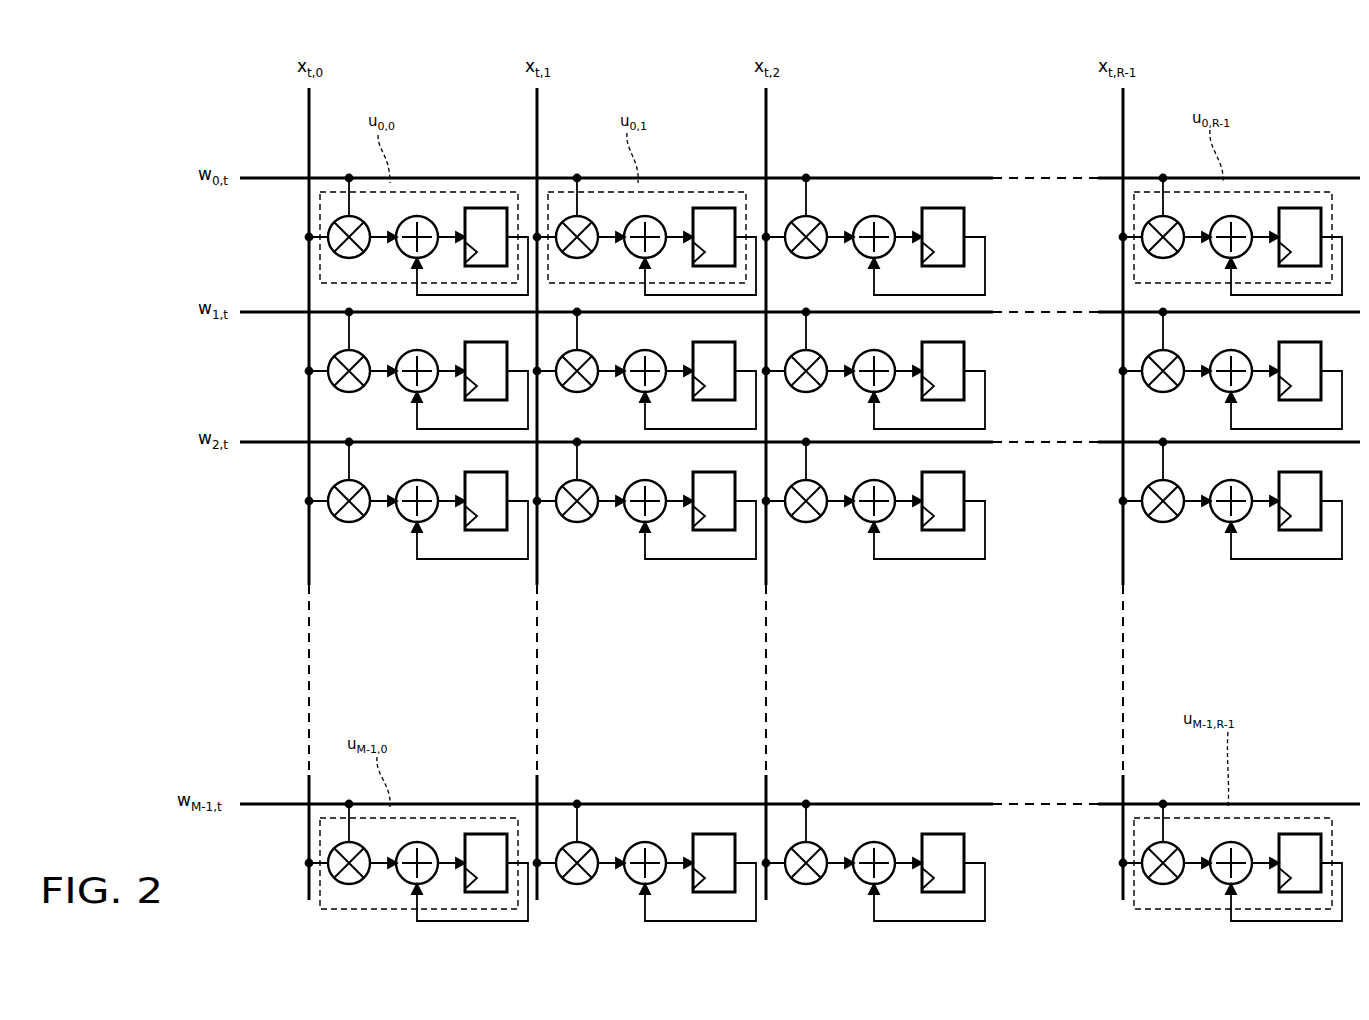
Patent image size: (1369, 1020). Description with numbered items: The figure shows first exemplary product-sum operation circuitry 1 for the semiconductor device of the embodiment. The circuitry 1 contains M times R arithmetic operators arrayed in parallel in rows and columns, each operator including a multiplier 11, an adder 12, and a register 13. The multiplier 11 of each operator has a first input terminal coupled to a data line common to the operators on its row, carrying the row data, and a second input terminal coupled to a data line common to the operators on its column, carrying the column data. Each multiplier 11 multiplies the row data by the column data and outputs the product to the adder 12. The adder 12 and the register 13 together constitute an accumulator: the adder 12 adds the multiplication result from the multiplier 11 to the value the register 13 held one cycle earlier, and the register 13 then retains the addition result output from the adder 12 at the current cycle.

The product-sum operation circuitry 1 is at (926, 58).
The multiplier 11 is at (336, 253).
The adder 12 is at (417, 216).
The register 13 is at (482, 208).